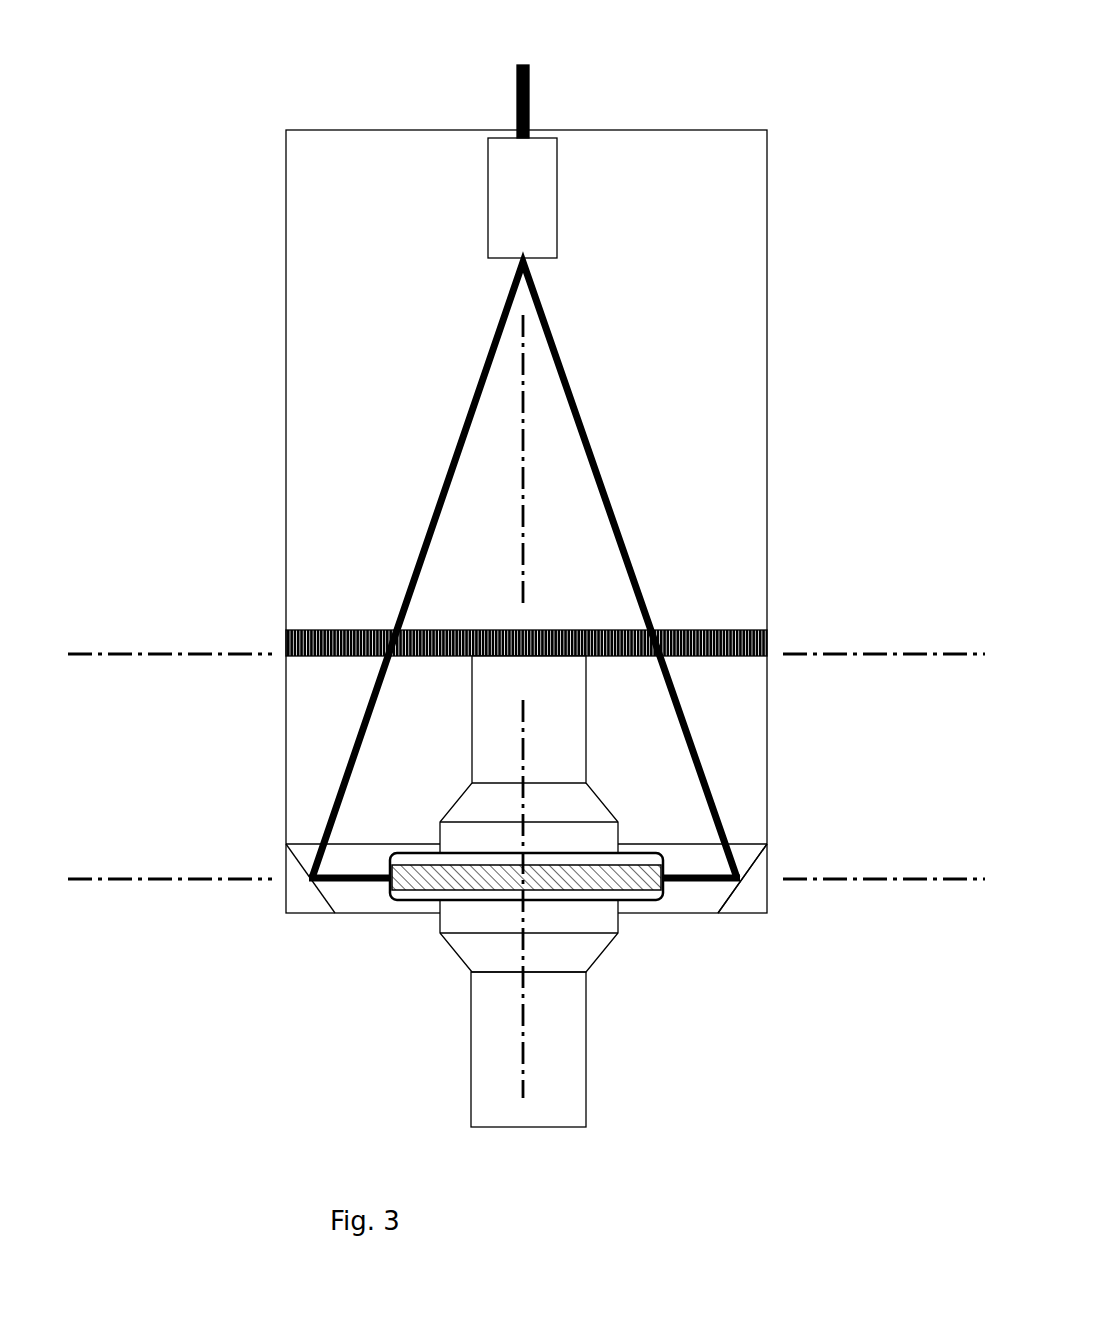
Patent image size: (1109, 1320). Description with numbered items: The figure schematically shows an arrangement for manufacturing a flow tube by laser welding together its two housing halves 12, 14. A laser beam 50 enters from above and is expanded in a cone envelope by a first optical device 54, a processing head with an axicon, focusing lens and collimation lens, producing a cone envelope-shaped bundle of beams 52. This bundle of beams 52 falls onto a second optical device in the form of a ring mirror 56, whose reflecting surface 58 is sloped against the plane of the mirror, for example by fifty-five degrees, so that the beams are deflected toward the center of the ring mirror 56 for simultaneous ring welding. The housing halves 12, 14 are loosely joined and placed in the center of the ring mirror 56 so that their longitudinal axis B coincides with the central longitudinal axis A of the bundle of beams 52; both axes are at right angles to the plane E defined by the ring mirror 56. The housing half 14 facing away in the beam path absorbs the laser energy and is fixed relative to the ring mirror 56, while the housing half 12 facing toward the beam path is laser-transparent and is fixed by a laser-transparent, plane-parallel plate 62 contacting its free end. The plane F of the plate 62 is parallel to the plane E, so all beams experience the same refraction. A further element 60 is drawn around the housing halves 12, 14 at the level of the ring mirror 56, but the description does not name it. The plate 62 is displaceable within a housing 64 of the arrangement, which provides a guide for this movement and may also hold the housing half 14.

The housing half 12 is at (587, 727).
The housing half 14 is at (586, 1072).
The laser beam 50 is at (530, 97).
The bundle of beams 52 is at (458, 433).
The first optical device 54 is at (483, 185).
The ring mirror 56 is at (293, 896).
The reflecting surface 58 is at (745, 853).
The sealing ring 60 is at (415, 880).
The laser-transparent plate 62 is at (283, 642).
The housing 64 is at (766, 273).
The central longitudinal axis A is at (525, 390).
The longitudinal axis B is at (520, 1015).
The plane E is at (160, 878).
The plane F is at (160, 654).